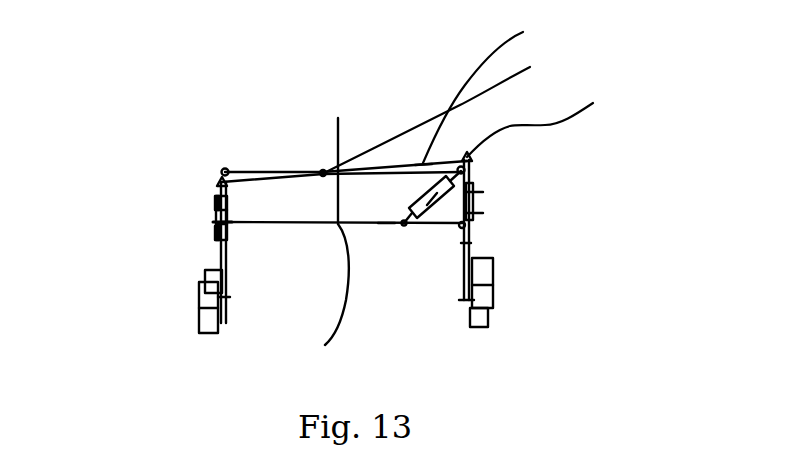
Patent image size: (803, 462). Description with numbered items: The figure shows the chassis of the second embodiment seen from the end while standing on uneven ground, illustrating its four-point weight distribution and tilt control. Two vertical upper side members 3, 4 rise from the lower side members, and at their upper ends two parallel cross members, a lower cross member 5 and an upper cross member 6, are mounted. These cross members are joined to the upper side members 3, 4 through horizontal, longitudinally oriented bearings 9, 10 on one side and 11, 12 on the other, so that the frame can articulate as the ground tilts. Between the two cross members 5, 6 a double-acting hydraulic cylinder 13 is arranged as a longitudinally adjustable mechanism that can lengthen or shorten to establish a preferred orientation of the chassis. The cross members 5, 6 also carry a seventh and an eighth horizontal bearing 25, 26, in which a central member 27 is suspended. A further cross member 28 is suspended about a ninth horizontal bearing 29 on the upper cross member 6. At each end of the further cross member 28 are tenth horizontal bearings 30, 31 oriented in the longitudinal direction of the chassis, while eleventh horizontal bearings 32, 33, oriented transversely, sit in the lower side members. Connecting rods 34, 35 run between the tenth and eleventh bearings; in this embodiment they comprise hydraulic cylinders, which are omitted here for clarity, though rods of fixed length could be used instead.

The upper side member 3 is at (228, 252).
The upper side member 4 is at (460, 243).
The lower cross member 5 is at (385, 226).
The upper cross member 6 is at (257, 169).
The horizontal longitudinal bearing 9 is at (225, 169).
The horizontal longitudinal bearing 10 is at (226, 224).
The horizontal longitudinal bearing 11 is at (468, 173).
The horizontal longitudinal bearing 12 is at (472, 223).
The double-acting hydraulic cylinder 13 is at (440, 196).
The seventh horizontal bearing 25 is at (314, 302).
The eighth horizontal bearing 26 is at (491, 87).
The central member 27 is at (340, 137).
The further cross member 28 is at (452, 111).
The ninth horizontal bearing 29 is at (323, 171).
The tenth horizontal bearing 30 is at (555, 124).
The tenth horizontal bearing 31 is at (218, 184).
The eleventh horizontal bearing 32 is at (460, 290).
The eleventh horizontal bearing 33 is at (232, 300).
The connecting rod 34 is at (474, 193).
The connecting rod 35 is at (218, 208).